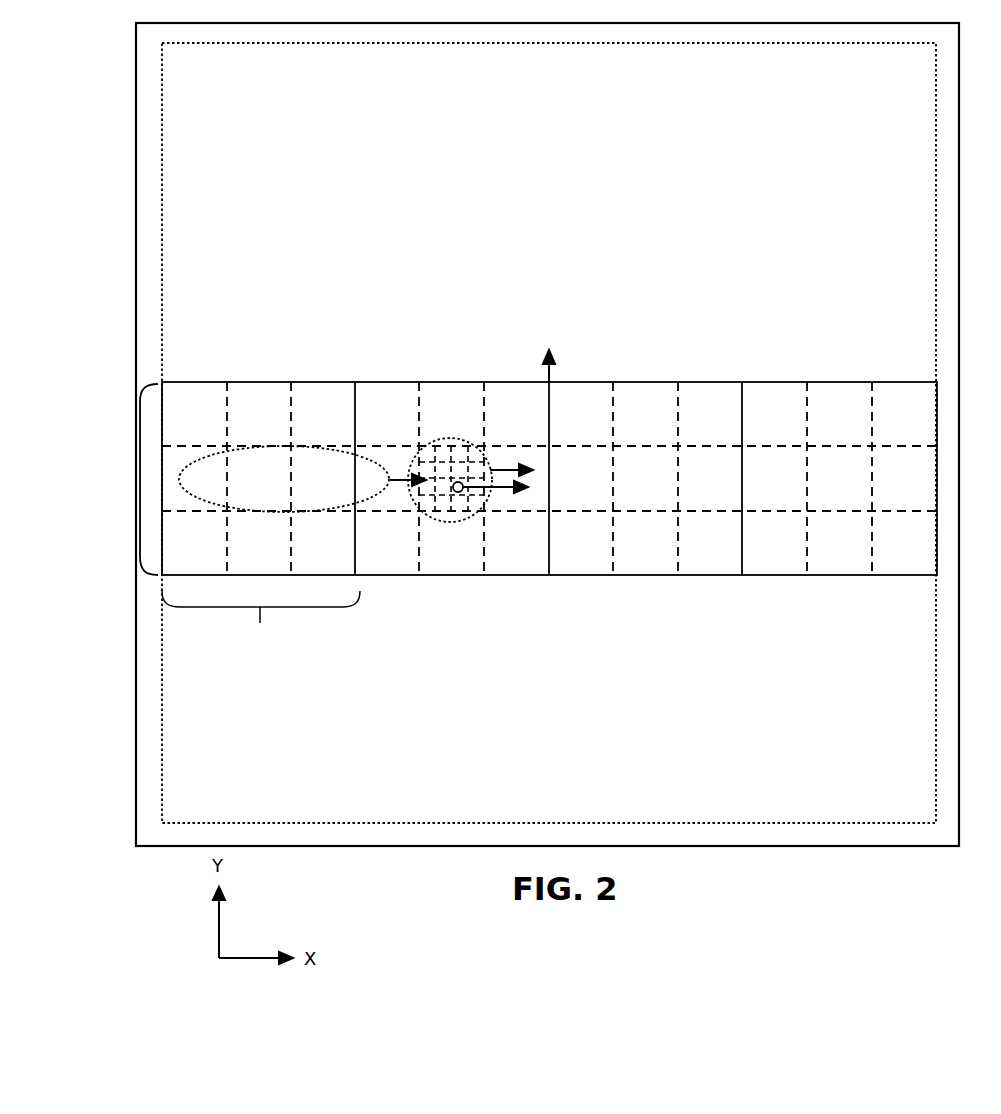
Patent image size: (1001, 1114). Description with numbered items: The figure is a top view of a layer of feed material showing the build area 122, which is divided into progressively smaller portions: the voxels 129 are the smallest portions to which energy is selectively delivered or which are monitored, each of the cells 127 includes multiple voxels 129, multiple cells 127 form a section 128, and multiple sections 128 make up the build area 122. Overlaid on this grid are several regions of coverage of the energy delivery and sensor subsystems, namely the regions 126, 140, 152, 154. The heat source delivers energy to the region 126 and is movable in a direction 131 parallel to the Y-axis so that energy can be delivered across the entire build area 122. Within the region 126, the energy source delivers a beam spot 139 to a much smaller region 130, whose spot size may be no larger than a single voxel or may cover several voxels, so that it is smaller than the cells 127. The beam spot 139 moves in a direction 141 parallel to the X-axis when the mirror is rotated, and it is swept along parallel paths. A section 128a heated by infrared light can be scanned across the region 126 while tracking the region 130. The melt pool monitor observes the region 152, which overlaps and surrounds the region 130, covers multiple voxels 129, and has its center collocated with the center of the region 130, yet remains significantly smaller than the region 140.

The build area 122 is at (501, 434).
The region 140 is at (162, 132).
The region 126 is at (510, 455).
The cells 127 is at (228, 395).
The sections 128 is at (261, 622).
The section 128a is at (261, 607).
The region 154 is at (327, 446).
The region 152 is at (437, 440).
The voxels 129 is at (478, 508).
The region 130 is at (396, 567).
The beam spot 139 is at (455, 492).
The direction 141 is at (500, 487).
The direction 131 is at (543, 367).